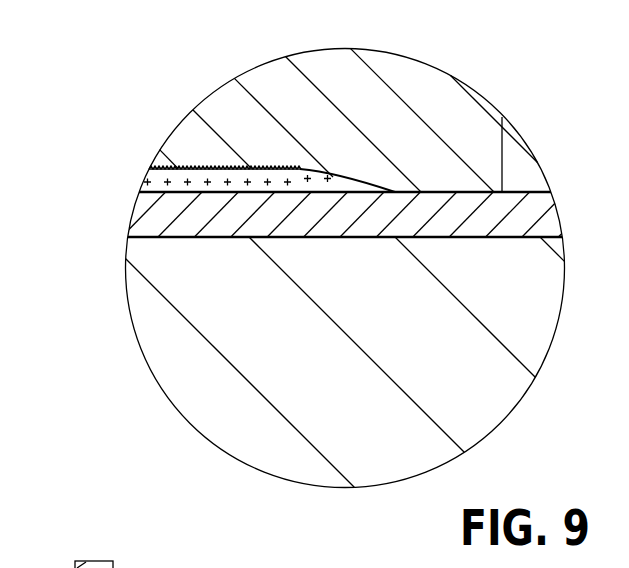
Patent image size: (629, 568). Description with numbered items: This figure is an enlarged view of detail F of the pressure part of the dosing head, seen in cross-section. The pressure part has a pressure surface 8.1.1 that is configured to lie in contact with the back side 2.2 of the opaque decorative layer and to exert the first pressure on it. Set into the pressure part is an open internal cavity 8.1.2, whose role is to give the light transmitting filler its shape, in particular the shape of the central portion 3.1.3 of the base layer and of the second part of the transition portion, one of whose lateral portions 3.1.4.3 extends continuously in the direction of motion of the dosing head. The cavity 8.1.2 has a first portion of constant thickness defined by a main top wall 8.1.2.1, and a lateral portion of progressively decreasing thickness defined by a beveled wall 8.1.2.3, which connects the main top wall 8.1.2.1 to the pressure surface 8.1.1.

The back side 2.2 is at (517, 192).
The pressure surface 8.1.1 is at (468, 192).
The open internal cavity 8.1.2 is at (261, 121).
The main top wall 8.1.2.1 is at (202, 167).
The beveled wall 8.1.2.3 is at (349, 182).
The central portion 3.1.3 is at (188, 118).
The lateral portion 3.1.4.3 is at (358, 102).
The detail F is at (361, 362).